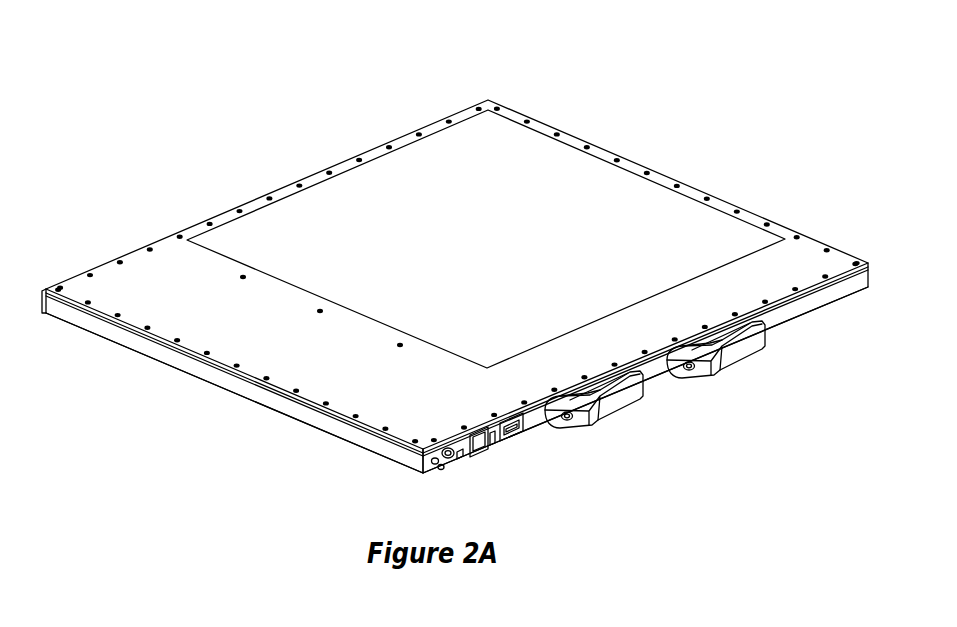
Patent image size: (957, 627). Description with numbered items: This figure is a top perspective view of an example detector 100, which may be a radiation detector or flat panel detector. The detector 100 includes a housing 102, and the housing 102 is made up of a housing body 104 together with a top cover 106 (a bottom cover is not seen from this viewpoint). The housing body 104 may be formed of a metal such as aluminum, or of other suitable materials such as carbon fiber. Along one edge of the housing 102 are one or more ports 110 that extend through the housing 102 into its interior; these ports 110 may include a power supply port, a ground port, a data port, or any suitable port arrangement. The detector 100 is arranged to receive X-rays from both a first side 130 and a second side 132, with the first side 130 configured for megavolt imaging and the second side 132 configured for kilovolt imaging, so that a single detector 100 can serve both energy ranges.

The detector 100 is at (713, 68).
The housing 102 is at (112, 257).
The housing body 104 is at (183, 360).
The top cover 106 is at (170, 267).
The ports 110 is at (498, 455).
The first side 130 is at (356, 207).
The second side 132 is at (325, 443).